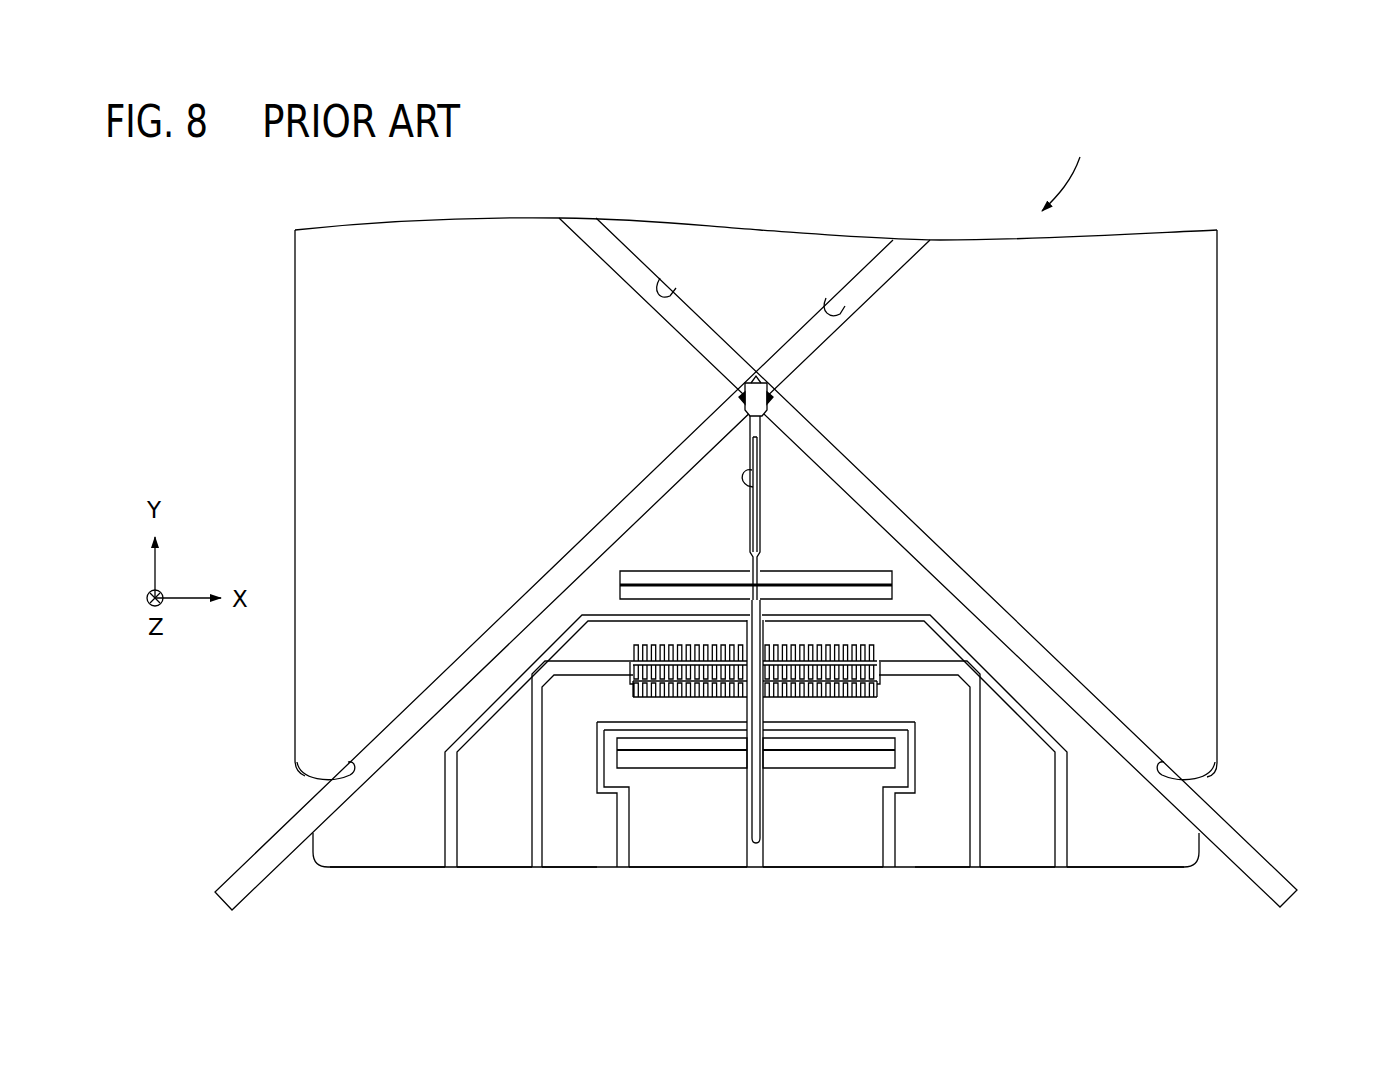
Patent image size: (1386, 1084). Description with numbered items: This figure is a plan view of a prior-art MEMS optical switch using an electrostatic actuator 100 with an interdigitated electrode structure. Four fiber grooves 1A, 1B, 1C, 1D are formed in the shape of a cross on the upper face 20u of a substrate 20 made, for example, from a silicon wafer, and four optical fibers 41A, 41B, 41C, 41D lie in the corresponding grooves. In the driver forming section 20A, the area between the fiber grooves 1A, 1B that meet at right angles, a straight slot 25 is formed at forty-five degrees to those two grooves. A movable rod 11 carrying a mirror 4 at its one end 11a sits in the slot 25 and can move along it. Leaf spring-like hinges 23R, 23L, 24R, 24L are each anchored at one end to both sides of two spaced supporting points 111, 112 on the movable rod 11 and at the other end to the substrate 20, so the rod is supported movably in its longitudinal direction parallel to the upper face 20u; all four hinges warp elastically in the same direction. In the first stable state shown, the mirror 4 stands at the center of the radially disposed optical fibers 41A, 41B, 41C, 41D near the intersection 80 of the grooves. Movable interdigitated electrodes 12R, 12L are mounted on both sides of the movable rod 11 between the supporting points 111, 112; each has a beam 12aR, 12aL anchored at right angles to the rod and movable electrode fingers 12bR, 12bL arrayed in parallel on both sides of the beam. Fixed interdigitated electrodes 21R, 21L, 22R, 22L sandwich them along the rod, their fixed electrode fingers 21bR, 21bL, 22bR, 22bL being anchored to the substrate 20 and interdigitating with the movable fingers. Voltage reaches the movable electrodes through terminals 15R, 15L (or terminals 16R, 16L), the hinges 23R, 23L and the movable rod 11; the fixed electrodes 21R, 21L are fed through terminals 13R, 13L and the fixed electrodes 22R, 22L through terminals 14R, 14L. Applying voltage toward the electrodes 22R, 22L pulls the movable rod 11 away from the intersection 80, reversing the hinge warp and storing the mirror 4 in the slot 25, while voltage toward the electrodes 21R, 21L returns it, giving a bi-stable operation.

The actuator 100 is at (1118, 152).
The substrate 20 is at (1218, 345).
The upper face 20u is at (1180, 441).
The driver forming section 20A is at (1165, 868).
The optical fiber 41A is at (263, 851).
The optical fiber 41B is at (1244, 852).
The optical fiber 41C is at (592, 226).
The optical fiber 41D is at (906, 236).
The fiber groove 1A is at (310, 763).
The fiber groove 1B is at (1210, 766).
The fiber groove 1C is at (660, 280).
The fiber groove 1D is at (828, 300).
The mirror 4 is at (776, 391).
The intersection 80 is at (727, 398).
The movable rod 11 is at (750, 558).
The one end 11a is at (750, 446).
The straight slot 25 is at (754, 478).
The hinge 23L is at (632, 582).
The hinge 23R is at (835, 580).
The supporting point 111 is at (745, 578).
The supporting point 112 is at (748, 752).
The fixed interdigitated electrode 22L is at (670, 708).
The fixed interdigitated electrode 22R is at (842, 708).
The fixed interdigitated electrode 21L is at (667, 633).
The fixed interdigitated electrode 21R is at (846, 631).
The fixed electrode finger 21bL is at (660, 655).
The fixed electrode finger 21bR is at (862, 652).
The movable interdigitated electrode 12L is at (398, 656).
The movable interdigitated electrode 12R is at (1100, 548).
The beam 12aL is at (632, 657).
The beam 12aR is at (883, 666).
The movable electrode finger 12bL is at (633, 669).
The movable electrode finger 12bR is at (883, 656).
The fixed electrode finger 22bL is at (633, 690).
The fixed electrode finger 22bR is at (880, 690).
The hinge 24L is at (667, 753).
The hinge 24R is at (825, 758).
The terminal 13L is at (497, 868).
The terminal 13R is at (1012, 868).
The terminal 14L is at (578, 868).
The terminal 14R is at (935, 868).
The terminal 15L is at (397, 868).
The terminal 15R is at (1115, 868).
The terminal 16L is at (735, 868).
The terminal 16R is at (808, 868).